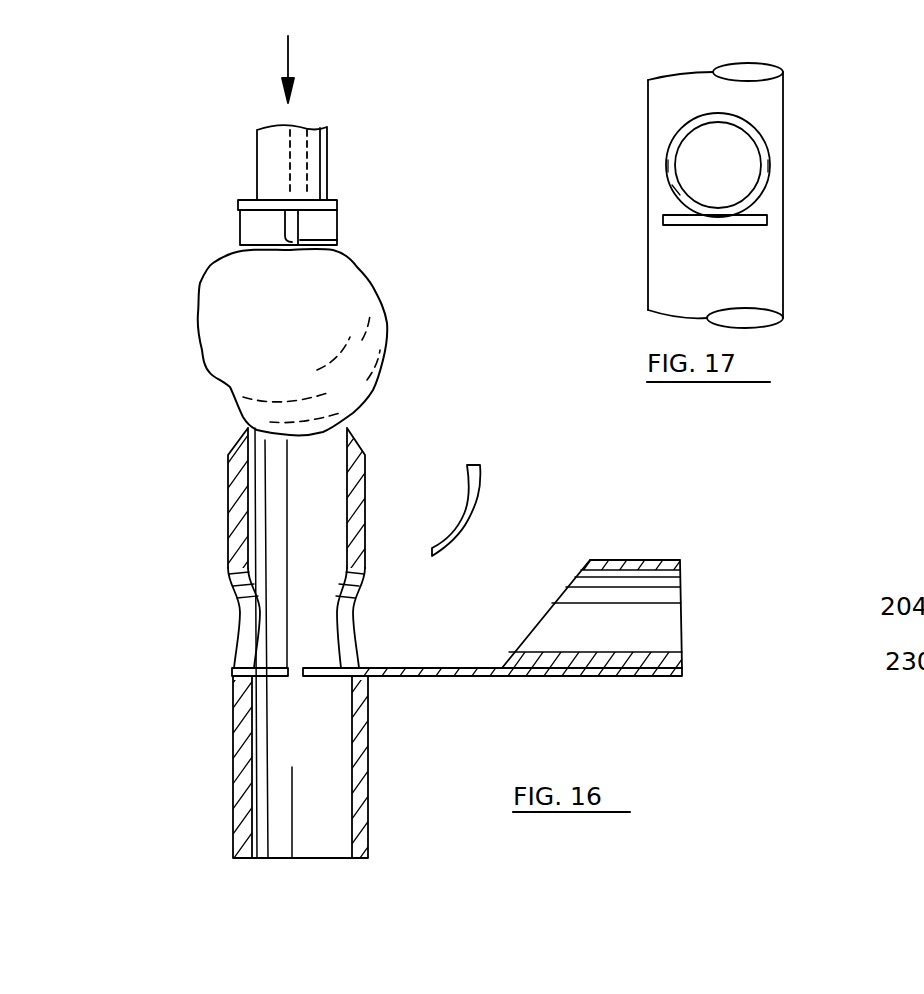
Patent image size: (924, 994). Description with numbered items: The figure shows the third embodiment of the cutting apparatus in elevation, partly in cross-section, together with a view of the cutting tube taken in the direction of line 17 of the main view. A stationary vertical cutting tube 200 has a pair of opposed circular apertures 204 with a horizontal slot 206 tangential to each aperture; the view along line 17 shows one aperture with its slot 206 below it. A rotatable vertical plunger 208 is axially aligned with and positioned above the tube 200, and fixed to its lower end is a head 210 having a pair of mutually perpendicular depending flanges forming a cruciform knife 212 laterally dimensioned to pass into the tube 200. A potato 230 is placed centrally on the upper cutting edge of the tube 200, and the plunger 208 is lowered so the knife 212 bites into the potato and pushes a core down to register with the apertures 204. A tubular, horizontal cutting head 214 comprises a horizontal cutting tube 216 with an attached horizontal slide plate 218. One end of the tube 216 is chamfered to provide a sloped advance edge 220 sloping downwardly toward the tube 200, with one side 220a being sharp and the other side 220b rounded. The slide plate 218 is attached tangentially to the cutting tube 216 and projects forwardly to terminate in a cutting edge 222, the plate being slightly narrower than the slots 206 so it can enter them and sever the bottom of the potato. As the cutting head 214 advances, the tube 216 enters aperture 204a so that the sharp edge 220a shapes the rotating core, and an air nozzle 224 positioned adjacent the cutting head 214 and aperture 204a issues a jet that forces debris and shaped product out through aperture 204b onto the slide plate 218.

In FIG. 16, the stationary vertical cutting tube 200 is at (368, 803).
In FIG. 17, the stationary vertical cutting tube 200 is at (783, 117).
In FIG. 17, the opposed circular apertures 204 is at (657, 147).
In FIG. 16, the aperture 204a is at (356, 620).
In FIG. 16, the aperture 204b is at (244, 613).
In FIG. 16, the horizontal slot 206 is at (311, 692).
In FIG. 17, the horizontal slot 206 is at (760, 229).
In FIG. 16, the rotatable vertical plunger 208 is at (325, 152).
In FIG. 16, the head 210 is at (338, 203).
In FIG. 16, the cruciform knife 212 is at (338, 230).
In FIG. 16, the tubular horizontal cutting head 214 is at (638, 545).
In FIG. 16, the horizontal cutting tube 216 is at (668, 610).
In FIG. 17, the horizontal cutting tube 216 is at (672, 186).
In FIG. 16, the horizontal slide plate 218 is at (455, 677).
In FIG. 16, the sloped advance edge 220 is at (558, 598).
In FIG. 17, the sharp side of advance edge 220a is at (670, 170).
In FIG. 17, the rounded side of advance edge 220b is at (762, 173).
In FIG. 16, the cutting edge 222 is at (360, 658).
In FIG. 16, the air nozzle 224 is at (480, 505).
In FIG. 16, the potato 230 is at (383, 331).
In FIG. 16, the section line 17— 17 is at (188, 580).